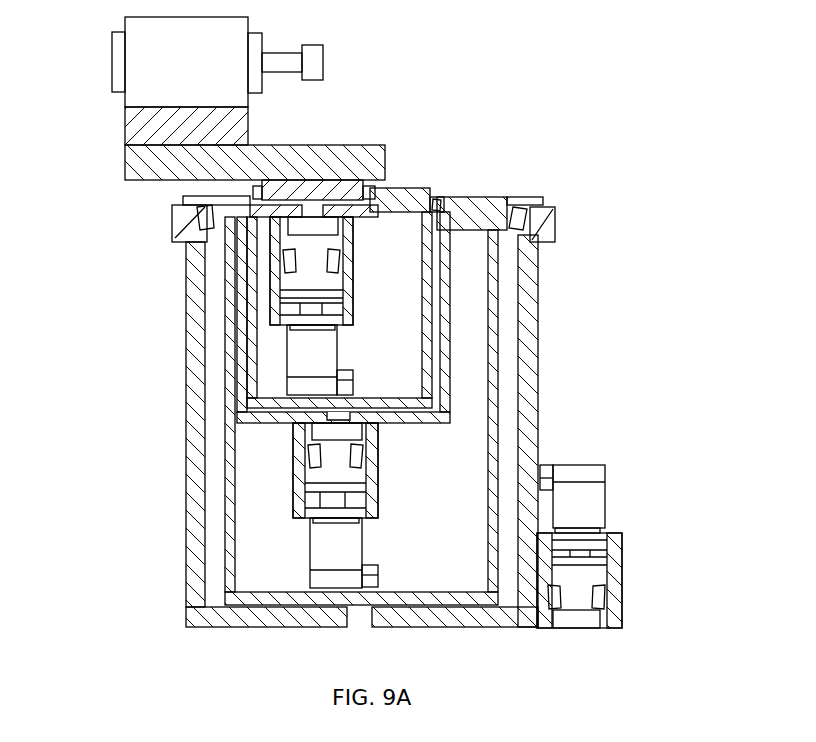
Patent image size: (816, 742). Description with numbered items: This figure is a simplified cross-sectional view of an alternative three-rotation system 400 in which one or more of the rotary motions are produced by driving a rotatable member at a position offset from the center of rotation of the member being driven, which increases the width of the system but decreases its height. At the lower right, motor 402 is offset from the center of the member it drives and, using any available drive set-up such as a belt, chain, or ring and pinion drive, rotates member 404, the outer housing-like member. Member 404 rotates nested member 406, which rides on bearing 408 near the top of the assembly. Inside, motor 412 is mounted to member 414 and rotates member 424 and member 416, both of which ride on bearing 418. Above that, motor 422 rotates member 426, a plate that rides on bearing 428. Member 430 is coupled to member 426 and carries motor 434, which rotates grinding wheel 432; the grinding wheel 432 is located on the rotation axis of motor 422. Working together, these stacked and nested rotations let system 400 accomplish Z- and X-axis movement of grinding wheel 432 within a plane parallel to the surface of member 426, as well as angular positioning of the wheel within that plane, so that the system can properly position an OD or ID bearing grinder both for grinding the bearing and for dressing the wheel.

The system 400 is at (572, 272).
The motor 402 is at (625, 607).
The member 404 is at (540, 405).
The nested member 406 is at (500, 198).
The bearing 408 is at (560, 222).
The motor 412 is at (380, 492).
The member 414 is at (392, 420).
The member 416 is at (372, 186).
The bearing 418 is at (440, 190).
The motor 422 is at (287, 352).
The member 424 is at (250, 262).
The member 426 is at (125, 172).
The bearing 428 is at (200, 208).
The member 430 is at (125, 130).
The grinding wheel 432 is at (326, 78).
The motor 434 is at (122, 48).